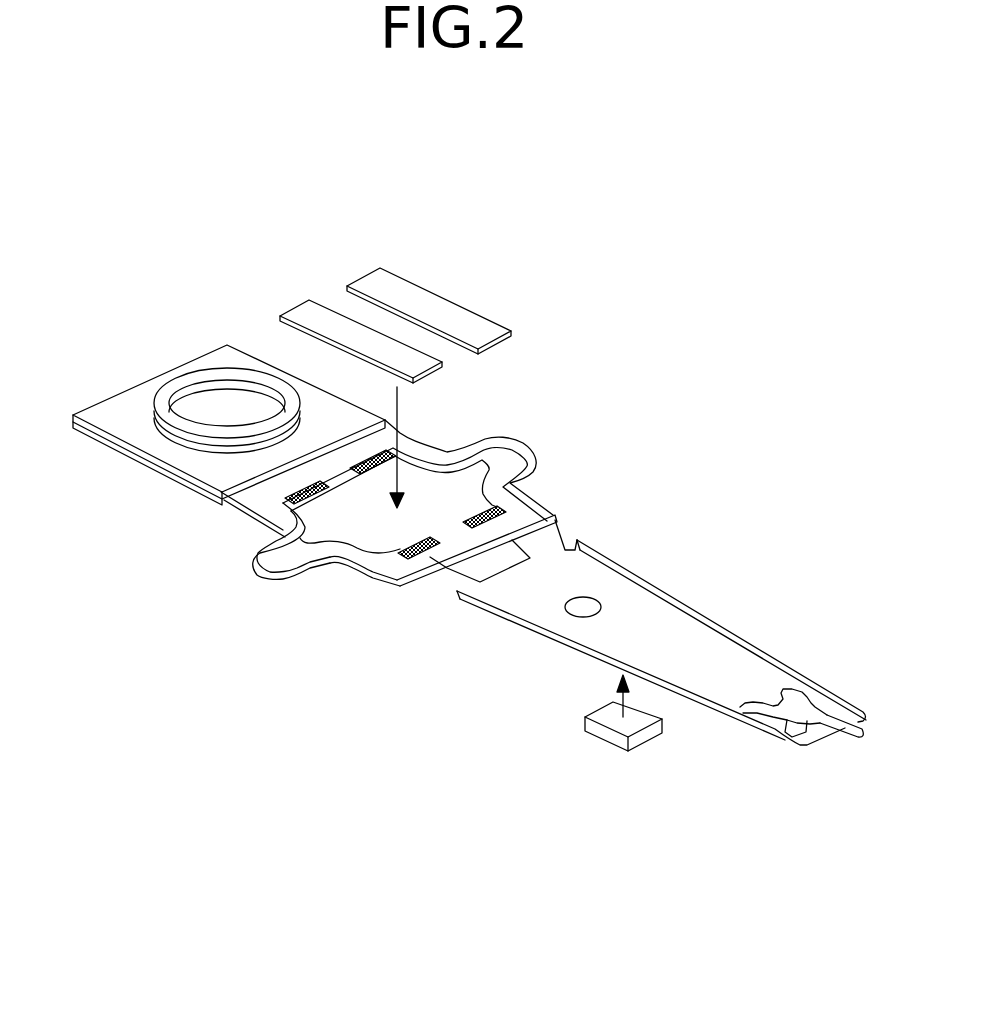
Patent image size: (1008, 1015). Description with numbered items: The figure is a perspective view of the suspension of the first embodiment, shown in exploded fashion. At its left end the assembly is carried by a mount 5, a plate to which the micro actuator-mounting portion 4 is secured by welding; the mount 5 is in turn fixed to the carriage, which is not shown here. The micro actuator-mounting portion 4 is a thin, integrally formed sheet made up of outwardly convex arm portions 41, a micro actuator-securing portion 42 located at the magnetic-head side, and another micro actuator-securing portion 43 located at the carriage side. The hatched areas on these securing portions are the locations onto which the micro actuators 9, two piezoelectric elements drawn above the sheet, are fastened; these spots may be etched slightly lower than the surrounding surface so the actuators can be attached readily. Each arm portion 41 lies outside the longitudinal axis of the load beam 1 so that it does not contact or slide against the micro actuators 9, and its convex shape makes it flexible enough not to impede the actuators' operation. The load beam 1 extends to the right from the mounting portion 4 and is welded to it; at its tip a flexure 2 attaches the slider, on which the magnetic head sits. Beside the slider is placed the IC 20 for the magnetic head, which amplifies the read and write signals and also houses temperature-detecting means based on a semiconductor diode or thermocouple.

The load beam 1 is at (707, 657).
The flexure 2 is at (802, 750).
The micro actuator-mounting portion 4 is at (393, 435).
The mount 5 is at (125, 414).
The micro actuators 9 is at (315, 313).
The IC for the magnetic head 20 is at (610, 708).
The arm portions 41 is at (255, 553).
The micro actuator-securing portion 42 is at (393, 562).
The micro actuator-securing portion 43 is at (270, 500).